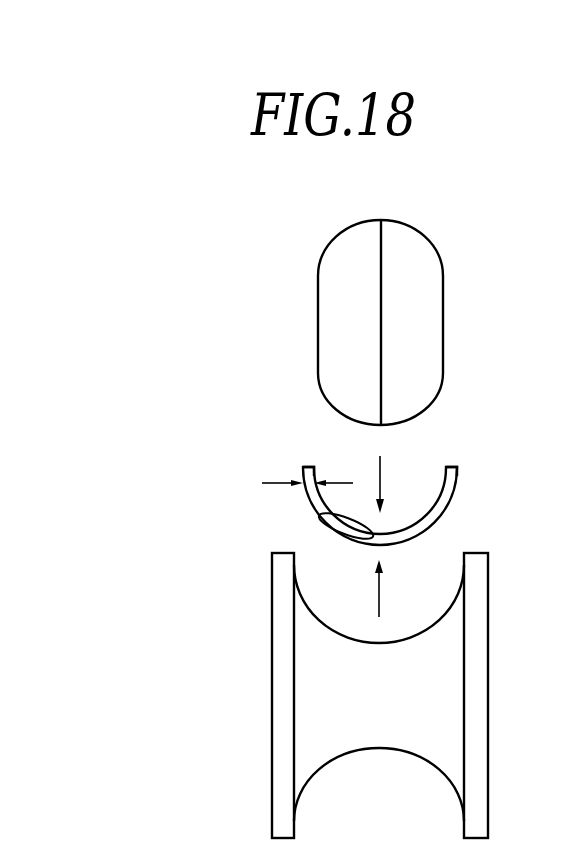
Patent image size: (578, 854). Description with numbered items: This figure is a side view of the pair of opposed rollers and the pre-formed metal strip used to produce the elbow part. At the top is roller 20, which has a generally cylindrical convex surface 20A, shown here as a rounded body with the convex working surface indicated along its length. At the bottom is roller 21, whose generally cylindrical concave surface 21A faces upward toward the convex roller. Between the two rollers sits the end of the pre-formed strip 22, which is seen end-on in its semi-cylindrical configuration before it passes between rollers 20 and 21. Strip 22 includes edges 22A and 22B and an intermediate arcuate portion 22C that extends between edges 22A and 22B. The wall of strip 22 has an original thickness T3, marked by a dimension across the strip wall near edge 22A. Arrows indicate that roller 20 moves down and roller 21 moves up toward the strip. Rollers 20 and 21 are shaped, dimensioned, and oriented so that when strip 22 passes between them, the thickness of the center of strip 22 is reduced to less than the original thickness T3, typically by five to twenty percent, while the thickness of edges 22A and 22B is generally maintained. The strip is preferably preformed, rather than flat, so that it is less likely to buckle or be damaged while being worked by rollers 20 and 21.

The roller 20 is at (451, 251).
The convex surface 20A is at (414, 412).
The roller 21 is at (500, 631).
The concave surface 21A is at (379, 646).
The pre-formed strip 22 is at (473, 500).
The edge 22A is at (305, 465).
The edge 22B is at (452, 465).
The intermediate arcuate portion 22C is at (320, 517).
The original thickness T3 is at (263, 483).